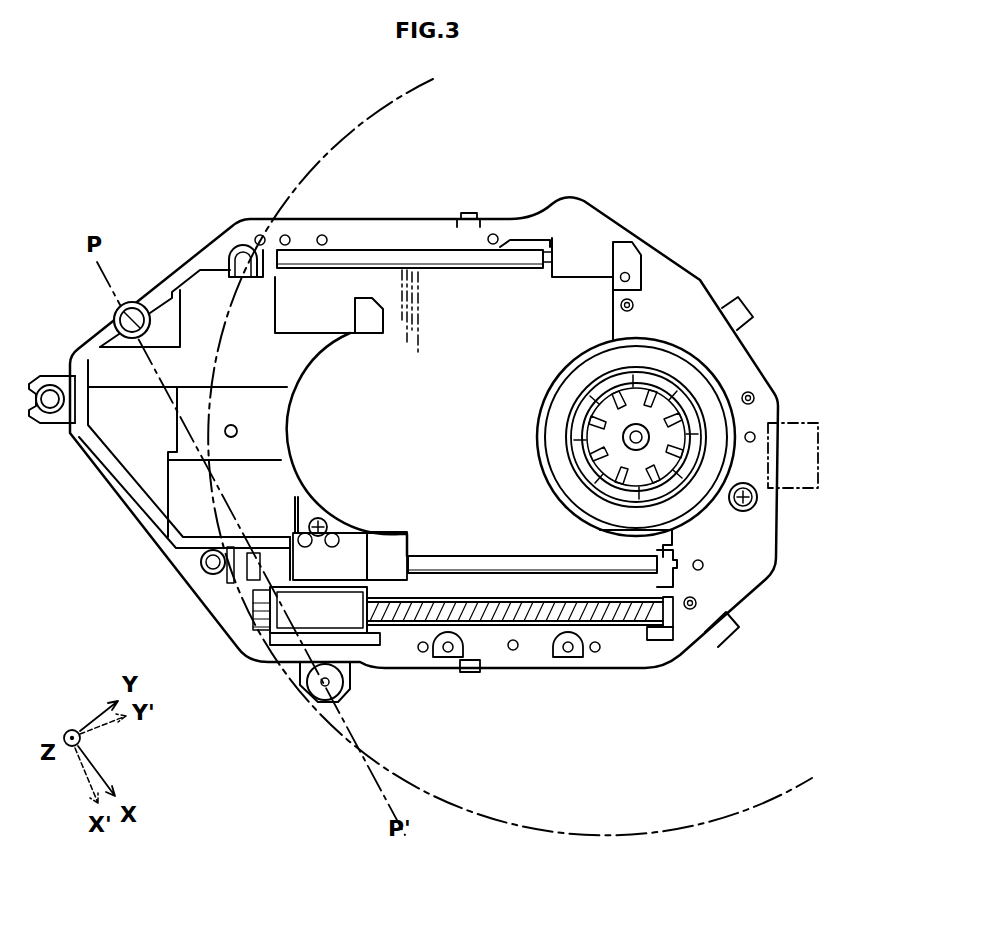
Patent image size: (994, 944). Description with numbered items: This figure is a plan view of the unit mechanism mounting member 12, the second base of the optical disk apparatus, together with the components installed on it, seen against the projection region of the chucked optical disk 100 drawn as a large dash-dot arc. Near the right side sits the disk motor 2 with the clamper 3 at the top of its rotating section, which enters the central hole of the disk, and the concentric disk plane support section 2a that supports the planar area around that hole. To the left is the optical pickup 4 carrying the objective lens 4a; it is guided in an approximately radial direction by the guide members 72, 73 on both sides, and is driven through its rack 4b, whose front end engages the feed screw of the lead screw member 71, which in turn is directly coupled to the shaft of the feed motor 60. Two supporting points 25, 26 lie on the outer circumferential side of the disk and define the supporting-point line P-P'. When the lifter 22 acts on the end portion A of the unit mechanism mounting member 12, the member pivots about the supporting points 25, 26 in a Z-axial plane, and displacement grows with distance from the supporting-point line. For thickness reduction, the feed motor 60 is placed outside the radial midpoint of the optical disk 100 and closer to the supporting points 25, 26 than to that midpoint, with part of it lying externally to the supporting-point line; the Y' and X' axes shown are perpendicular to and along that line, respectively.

The optical disk 100 is at (636, 828).
The unit mechanism mounting member 12 is at (777, 570).
The lifter 22 is at (790, 488).
The end portion A is at (778, 447).
The guide member 73 is at (412, 266).
The optical pickup 4 is at (262, 416).
The objective lens 4a is at (238, 431).
The rack 4b is at (388, 590).
The feed motor 60 is at (280, 618).
The supporting point 25 is at (324, 688).
The guide member 72 is at (527, 558).
The lead screw member 71 is at (542, 628).
The disk motor 2 is at (540, 410).
The disk plane support section 2a is at (557, 452).
The clamper 3 is at (592, 393).
The supporting point 26 is at (112, 320).